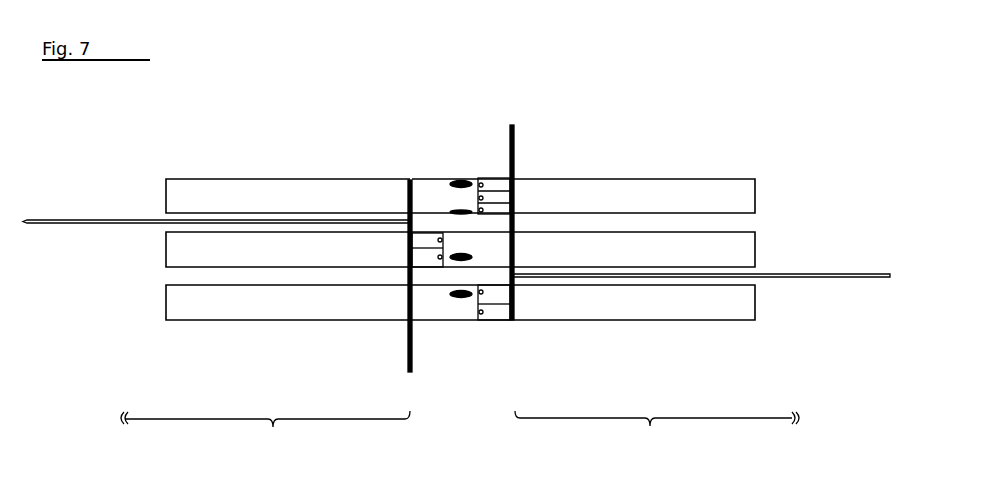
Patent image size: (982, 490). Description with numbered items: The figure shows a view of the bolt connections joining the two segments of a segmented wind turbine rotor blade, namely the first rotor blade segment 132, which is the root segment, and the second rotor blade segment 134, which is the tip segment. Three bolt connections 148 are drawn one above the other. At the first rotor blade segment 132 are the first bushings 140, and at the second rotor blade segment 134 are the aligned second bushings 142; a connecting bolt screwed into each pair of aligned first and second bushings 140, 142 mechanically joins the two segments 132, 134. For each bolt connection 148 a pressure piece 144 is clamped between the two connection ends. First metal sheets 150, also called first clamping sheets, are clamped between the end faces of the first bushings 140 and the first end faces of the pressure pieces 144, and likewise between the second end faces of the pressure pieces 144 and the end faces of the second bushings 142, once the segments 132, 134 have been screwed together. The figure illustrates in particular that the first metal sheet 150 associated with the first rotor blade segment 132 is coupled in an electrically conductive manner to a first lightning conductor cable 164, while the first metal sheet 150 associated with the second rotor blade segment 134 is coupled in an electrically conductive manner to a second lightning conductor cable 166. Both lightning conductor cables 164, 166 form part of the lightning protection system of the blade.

The first rotor blade segment 132 is at (265, 433).
The second rotor blade segment 134 is at (657, 433).
The first bushings 140 is at (187, 197).
The second bushings 142 is at (737, 303).
The pressure piece 144 is at (440, 190).
The bolt connection 148 is at (657, 298).
The first metal sheets 150 is at (405, 185).
The first lightning conductor cable 164 is at (115, 224).
The second lightning conductor cable 166 is at (823, 273).